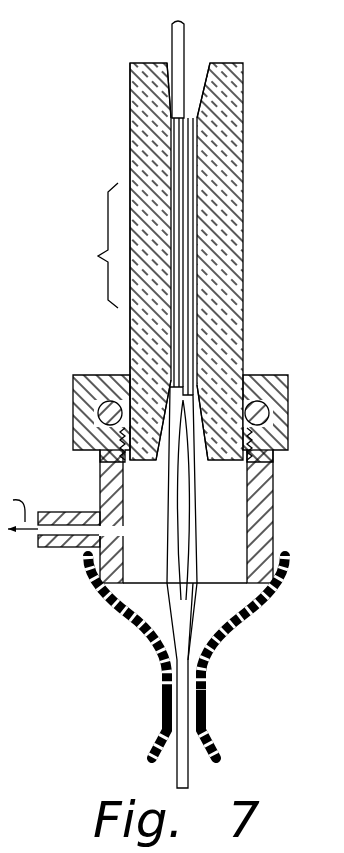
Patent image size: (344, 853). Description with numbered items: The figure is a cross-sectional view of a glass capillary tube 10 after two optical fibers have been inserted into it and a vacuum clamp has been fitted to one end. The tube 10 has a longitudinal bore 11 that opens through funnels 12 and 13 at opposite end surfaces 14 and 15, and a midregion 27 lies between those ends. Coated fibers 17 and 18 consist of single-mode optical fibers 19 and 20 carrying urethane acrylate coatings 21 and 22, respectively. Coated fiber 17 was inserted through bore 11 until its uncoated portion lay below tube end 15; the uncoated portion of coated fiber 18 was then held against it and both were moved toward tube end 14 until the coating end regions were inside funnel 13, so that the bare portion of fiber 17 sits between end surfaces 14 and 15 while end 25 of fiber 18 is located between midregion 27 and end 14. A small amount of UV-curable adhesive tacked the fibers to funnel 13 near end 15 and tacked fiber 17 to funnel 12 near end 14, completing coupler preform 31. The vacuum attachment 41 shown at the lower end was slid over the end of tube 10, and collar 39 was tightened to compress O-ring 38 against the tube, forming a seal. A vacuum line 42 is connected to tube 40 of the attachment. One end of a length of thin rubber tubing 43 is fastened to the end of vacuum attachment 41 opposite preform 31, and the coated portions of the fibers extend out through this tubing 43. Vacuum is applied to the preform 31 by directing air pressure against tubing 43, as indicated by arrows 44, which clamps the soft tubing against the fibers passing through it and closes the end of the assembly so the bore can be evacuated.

The glass capillary tube 10 is at (243, 90).
The bore 11 is at (187, 200).
The funnel 12 is at (205, 72).
The funnel 13 is at (203, 462).
The tube end 14 is at (135, 63).
The tube end 15 is at (157, 460).
The coated fiber 17 is at (170, 27).
The coated fiber 18 is at (193, 602).
The single-mode optical fiber 19 is at (174, 277).
The single-mode optical fiber 20 is at (189, 322).
The urethane acrylate coating 21 is at (184, 29).
The urethane acrylate coating 22 is at (192, 539).
The fiber end 25 is at (186, 128).
The midregion 27 is at (90, 245).
The coupler preform 31 is at (130, 125).
The O-ring 38 is at (266, 376).
The collar 39 is at (99, 375).
The tube 40 is at (100, 487).
The vacuum attachment 41 is at (73, 403).
The vacuum line 42 is at (62, 548).
The thin rubber tubing 43 is at (258, 620).
The arrows 44 is at (160, 700).